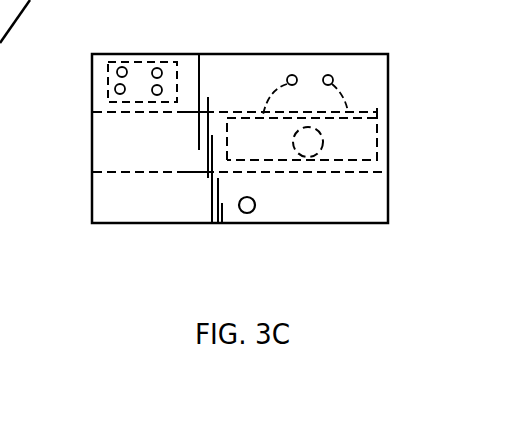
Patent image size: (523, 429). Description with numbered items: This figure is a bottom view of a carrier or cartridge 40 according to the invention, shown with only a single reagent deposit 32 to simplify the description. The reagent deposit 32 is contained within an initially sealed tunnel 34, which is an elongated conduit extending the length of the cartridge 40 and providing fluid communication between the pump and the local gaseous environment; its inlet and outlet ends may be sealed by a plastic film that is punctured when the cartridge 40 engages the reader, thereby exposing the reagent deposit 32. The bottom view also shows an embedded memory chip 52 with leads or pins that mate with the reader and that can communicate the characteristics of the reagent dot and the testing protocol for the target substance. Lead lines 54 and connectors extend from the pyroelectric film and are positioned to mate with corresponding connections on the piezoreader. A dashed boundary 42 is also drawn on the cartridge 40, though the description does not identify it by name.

The reagent deposit 32 is at (312, 153).
The tunnel 34 is at (128, 158).
The carrier 40 is at (393, 237).
The conductive line 42 is at (390, 173).
The embedded memory chip 52 is at (135, 80).
The lead lines 54 is at (344, 94).